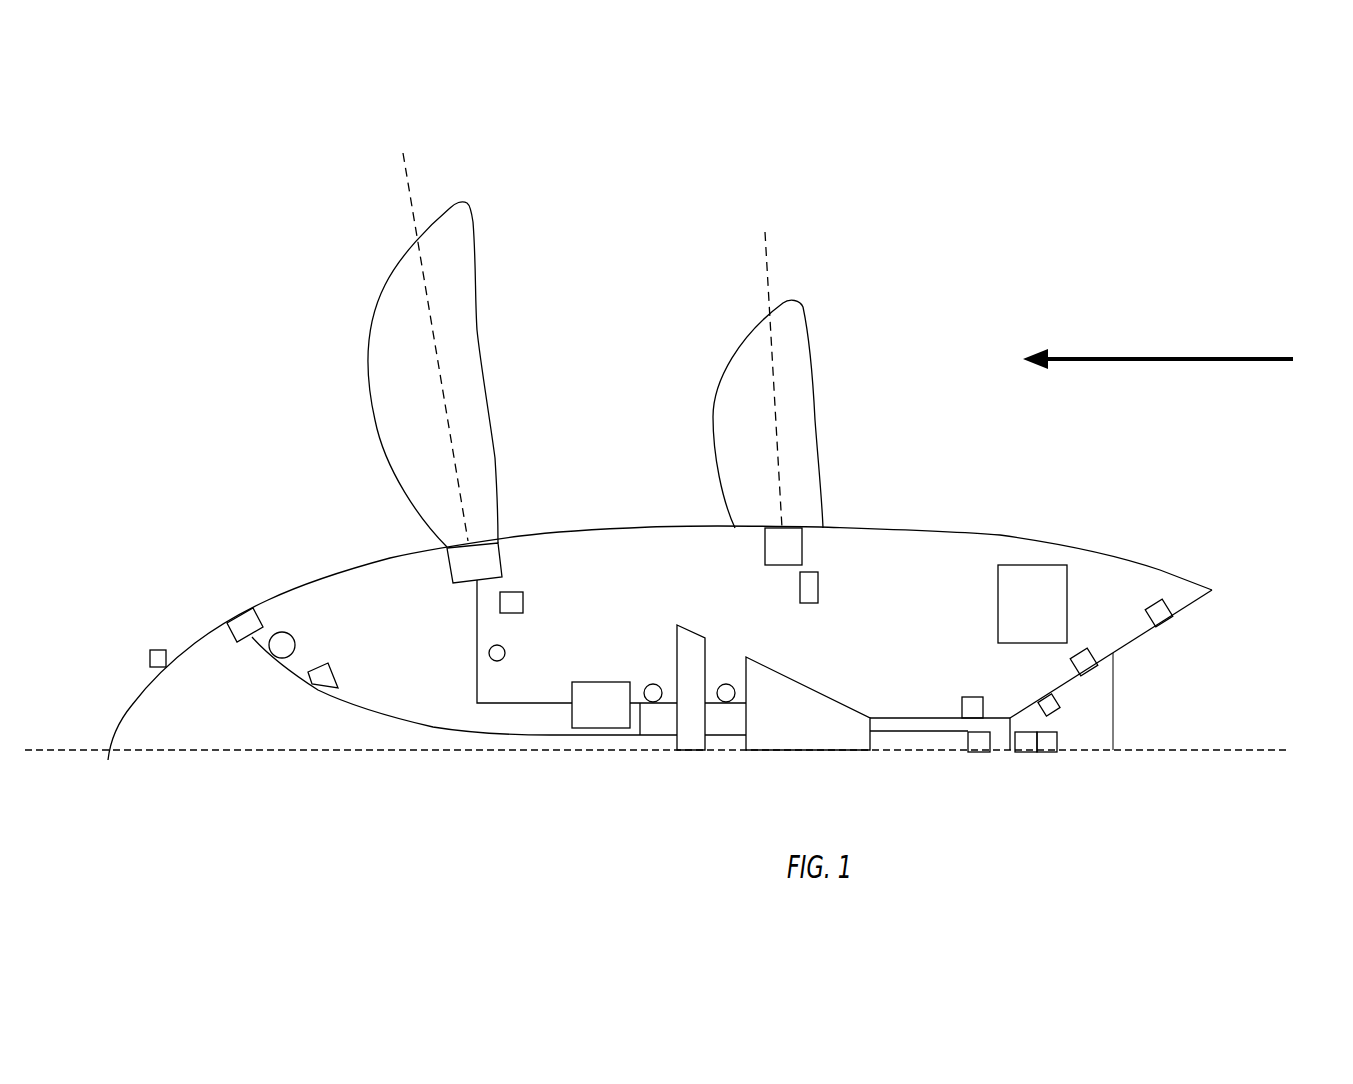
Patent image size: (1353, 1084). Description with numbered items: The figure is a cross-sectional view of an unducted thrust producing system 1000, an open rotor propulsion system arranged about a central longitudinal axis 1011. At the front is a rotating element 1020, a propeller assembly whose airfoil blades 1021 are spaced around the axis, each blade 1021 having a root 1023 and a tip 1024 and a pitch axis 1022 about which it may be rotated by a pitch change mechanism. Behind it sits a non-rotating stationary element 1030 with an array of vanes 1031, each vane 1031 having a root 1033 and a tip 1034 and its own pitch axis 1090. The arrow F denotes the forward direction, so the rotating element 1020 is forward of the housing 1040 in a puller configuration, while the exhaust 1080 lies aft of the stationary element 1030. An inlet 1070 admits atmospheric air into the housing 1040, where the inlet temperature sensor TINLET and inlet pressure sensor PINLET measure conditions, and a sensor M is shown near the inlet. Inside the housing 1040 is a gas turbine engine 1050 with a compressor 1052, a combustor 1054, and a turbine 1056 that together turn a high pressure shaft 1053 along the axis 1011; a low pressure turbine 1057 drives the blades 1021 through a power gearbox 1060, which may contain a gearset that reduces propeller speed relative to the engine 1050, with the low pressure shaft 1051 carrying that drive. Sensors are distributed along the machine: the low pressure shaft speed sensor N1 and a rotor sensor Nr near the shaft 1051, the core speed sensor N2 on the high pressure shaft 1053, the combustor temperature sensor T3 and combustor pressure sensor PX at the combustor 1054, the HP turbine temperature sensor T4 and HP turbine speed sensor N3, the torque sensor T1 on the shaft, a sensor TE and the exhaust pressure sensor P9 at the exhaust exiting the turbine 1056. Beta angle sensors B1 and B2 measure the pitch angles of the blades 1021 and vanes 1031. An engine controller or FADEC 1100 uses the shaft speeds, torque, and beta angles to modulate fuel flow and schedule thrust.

The unducted thrust producing system 1000 is at (1012, 256).
The central longitudinal axis 1011 is at (318, 752).
The rotating element 1020 is at (460, 360).
The airfoil blades 1021 is at (363, 350).
The first pitch axis 1022 is at (407, 170).
The root 1023 is at (483, 563).
The tip 1024 is at (451, 207).
The stationary element 1030 is at (832, 397).
The vanes 1031 is at (816, 403).
The root 1033 is at (806, 549).
The tip 1034 is at (785, 300).
The second pitch axis 1090 is at (768, 263).
The housing 1040 is at (965, 532).
The gas turbine engine 1050 is at (934, 686).
The low pressure shaft 1051 is at (642, 737).
The compressor 1052 is at (808, 732).
The high pressure shaft 1053 is at (853, 752).
The combustor 1054 is at (945, 733).
The turbine 1056 is at (1083, 723).
The low pressure turbine 1057 is at (693, 645).
The power gearbox 1060 is at (597, 713).
The inlet 1070 is at (234, 596).
The exhaust 1080 is at (1278, 634).
The engine controller / FADEC 1100 is at (1043, 595).
The forward direction arrow F is at (1227, 357).
The Mach number sensor M is at (158, 650).
The inlet temperature sensor TINLET is at (283, 632).
The inlet pressure sensor PINLET is at (329, 665).
The beta angle sensor B1 is at (523, 602).
The beta angle sensor B2 is at (818, 587).
The rotor speed sensor Nr is at (497, 661).
The low pressure shaft speed sensor N1 is at (652, 702).
The core speed sensor N2 is at (725, 702).
The HP turbine speed sensor N3 is at (1027, 745).
The torque sensor T1 is at (1047, 744).
The combustor temperature sensor T3 is at (982, 752).
The HP turbine temperature sensor T4 is at (1053, 703).
The exhaust temperature sensor TE is at (1090, 653).
The combustor pressure sensor PX is at (973, 697).
The exhaust pressure sensor P9 is at (1162, 608).